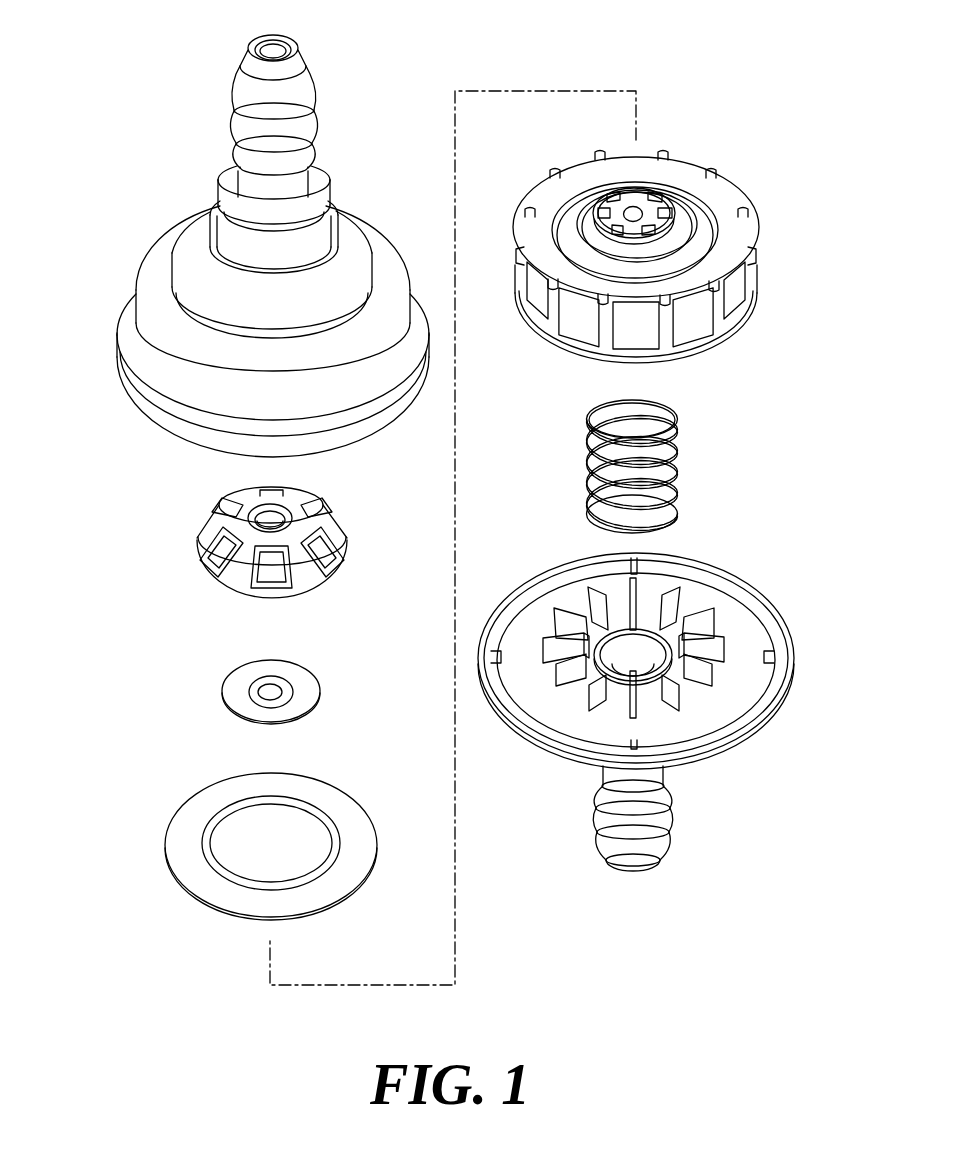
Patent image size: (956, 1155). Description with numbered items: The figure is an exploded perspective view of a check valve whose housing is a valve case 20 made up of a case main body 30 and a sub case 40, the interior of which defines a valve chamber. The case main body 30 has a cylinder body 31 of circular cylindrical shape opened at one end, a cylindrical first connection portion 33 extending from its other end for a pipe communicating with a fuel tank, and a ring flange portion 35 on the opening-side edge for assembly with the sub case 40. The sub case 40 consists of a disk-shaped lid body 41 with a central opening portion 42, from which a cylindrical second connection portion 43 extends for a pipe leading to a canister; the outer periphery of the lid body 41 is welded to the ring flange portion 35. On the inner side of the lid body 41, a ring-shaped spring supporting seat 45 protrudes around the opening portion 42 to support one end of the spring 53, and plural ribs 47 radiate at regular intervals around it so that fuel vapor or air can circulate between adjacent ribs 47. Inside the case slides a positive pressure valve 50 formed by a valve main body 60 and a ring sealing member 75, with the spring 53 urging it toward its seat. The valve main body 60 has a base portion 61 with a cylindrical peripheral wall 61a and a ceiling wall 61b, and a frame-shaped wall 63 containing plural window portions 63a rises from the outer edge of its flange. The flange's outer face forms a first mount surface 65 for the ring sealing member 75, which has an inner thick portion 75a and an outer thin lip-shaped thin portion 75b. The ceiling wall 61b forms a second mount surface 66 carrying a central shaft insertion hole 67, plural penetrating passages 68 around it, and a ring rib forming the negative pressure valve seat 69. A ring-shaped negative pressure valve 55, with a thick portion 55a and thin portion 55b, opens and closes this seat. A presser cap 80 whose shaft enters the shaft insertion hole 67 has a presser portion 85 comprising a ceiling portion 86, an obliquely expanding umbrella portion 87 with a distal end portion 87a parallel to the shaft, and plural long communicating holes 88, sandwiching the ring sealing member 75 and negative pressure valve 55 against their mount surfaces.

The valve case 20 is at (120, 957).
The case main body 30 is at (170, 436).
The cylinder body 31 is at (145, 327).
The first connection portion 33 is at (305, 120).
The ring flange portion 35 is at (160, 395).
The sub case 40 is at (622, 873).
The lid body 41 is at (717, 718).
The opening portion 42 is at (656, 651).
The second connection portion 43 is at (653, 827).
The spring supporting seat 45 is at (640, 633).
The ribs 47 is at (583, 603).
The positive pressure valve 50 is at (496, 480).
The spring 53 is at (681, 476).
The negative pressure valve 55 is at (213, 685).
The thick portion 55a is at (283, 683).
The thin portion 55b is at (307, 687).
The valve main body 60 is at (570, 364).
The base portion 61 is at (643, 173).
The peripheral wall 61a is at (580, 238).
The ceiling wall 61b is at (585, 207).
The frame-shaped wall 63 is at (718, 320).
The window portions 63a is at (535, 302).
The first mount surface 65 is at (693, 175).
The second mount surface 66 is at (632, 198).
The shaft insertion hole 67 is at (645, 214).
The penetrating passages 68 is at (615, 195).
The negative pressure valve seat 69 is at (662, 193).
The ring sealing member 75 is at (355, 800).
The thick portion 75a is at (303, 807).
The thin portion 75b is at (343, 885).
The presser cap 80 is at (345, 503).
The presser portion 85 is at (402, 515).
The ceiling portion 86 is at (323, 522).
The umbrella portion 87 is at (342, 538).
The distal end portion 87a is at (243, 601).
The communicating holes 88 is at (218, 556).